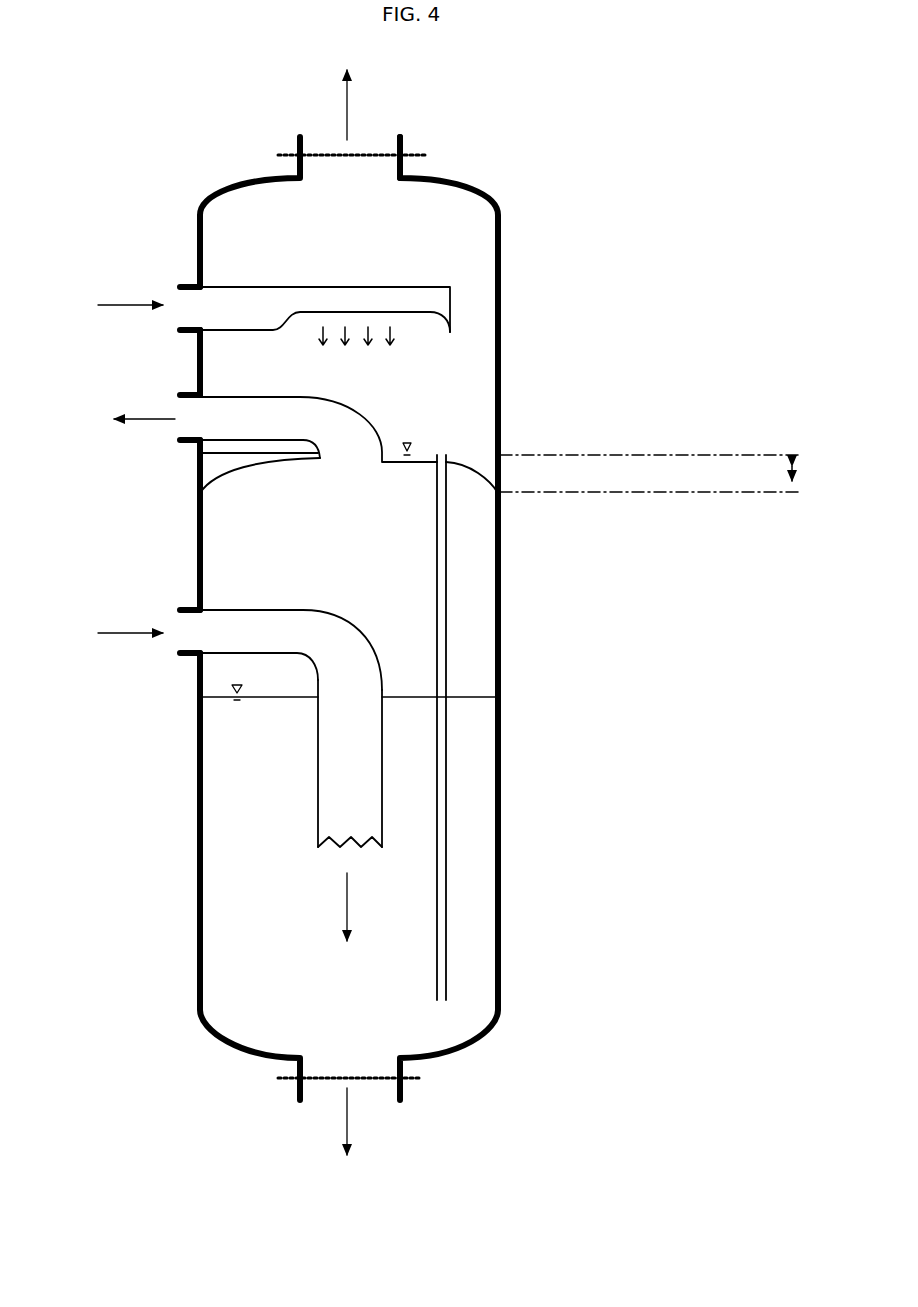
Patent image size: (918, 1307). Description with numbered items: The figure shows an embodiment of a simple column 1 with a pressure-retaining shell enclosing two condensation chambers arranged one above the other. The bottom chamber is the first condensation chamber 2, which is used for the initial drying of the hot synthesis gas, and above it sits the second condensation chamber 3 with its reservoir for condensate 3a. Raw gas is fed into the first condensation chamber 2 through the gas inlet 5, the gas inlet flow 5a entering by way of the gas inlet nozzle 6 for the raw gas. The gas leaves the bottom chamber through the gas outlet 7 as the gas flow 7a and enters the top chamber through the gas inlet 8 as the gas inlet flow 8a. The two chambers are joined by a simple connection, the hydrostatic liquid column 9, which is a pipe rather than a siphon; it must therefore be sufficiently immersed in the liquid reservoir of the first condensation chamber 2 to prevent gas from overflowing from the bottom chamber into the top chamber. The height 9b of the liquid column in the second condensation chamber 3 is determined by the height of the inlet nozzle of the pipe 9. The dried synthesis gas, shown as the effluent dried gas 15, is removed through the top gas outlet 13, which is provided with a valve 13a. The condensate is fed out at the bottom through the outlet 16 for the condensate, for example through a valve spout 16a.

The column with pressure-retaining shell 1 is at (232, 180).
The first condensation chamber 2 is at (215, 872).
The second condensation chamber 3 is at (215, 364).
The reservoir for condensate in the second condensation chamber 3a is at (210, 460).
The gas inlet in the first condensation chamber 5 is at (103, 614).
The gas inlet flow in the first condensation chamber 5a is at (335, 890).
The gas inlet nozzle for the raw gas 6 is at (313, 760).
The gas outlet from the first condensation chamber 7 is at (97, 402).
The gas flow from the first condensation chamber 7a is at (329, 432).
The gas inlet in the second condensation chamber 8 is at (105, 290).
The gas inlet flow in the second condensation chamber 8a is at (356, 353).
The hydrostatic liquid column between the first and second condensation chambers 9 is at (437, 945).
The height of the liquid column in the second condensation chamber 9b is at (649, 473).
The gas outlet for the dried gas 13 is at (400, 141).
The valve 13a is at (290, 148).
The effluent dried gas 15 is at (333, 85).
The outlet for the condensate 16 is at (357, 1133).
The valve 16a is at (410, 1082).